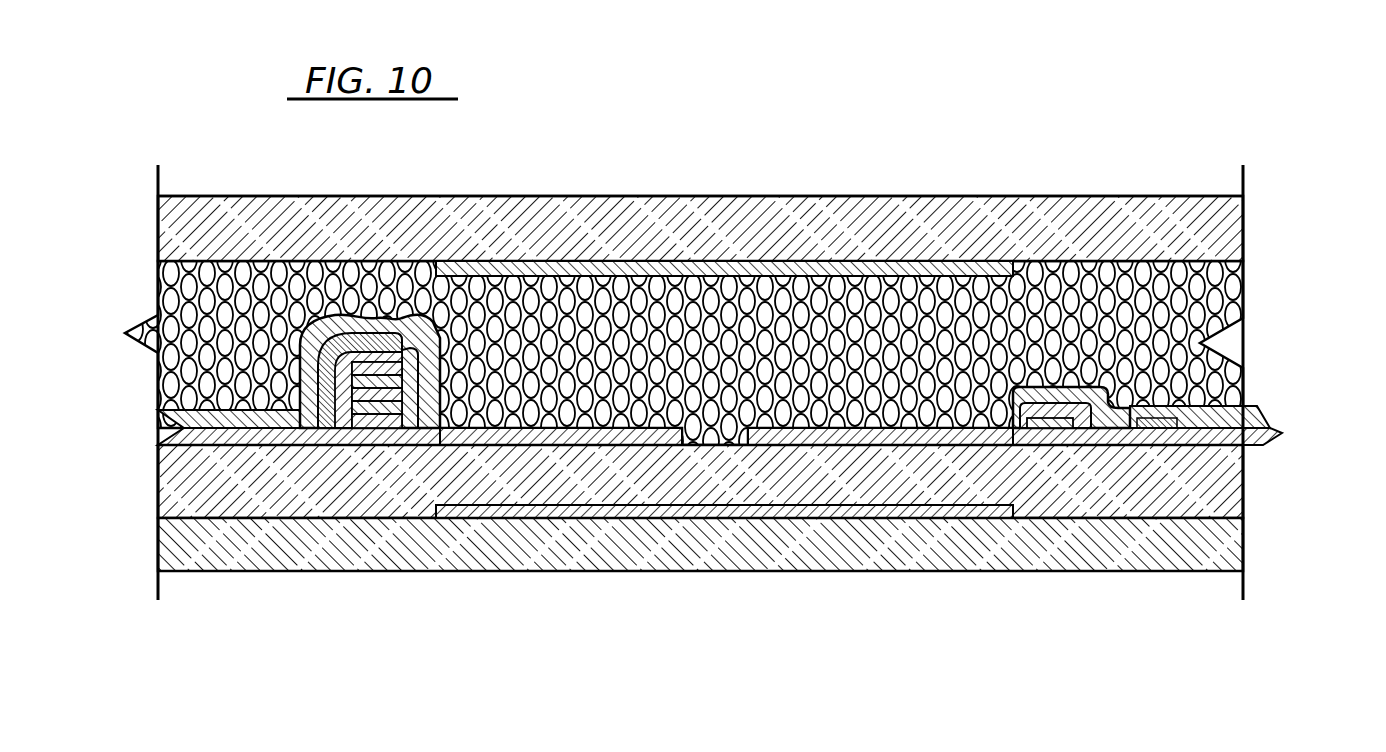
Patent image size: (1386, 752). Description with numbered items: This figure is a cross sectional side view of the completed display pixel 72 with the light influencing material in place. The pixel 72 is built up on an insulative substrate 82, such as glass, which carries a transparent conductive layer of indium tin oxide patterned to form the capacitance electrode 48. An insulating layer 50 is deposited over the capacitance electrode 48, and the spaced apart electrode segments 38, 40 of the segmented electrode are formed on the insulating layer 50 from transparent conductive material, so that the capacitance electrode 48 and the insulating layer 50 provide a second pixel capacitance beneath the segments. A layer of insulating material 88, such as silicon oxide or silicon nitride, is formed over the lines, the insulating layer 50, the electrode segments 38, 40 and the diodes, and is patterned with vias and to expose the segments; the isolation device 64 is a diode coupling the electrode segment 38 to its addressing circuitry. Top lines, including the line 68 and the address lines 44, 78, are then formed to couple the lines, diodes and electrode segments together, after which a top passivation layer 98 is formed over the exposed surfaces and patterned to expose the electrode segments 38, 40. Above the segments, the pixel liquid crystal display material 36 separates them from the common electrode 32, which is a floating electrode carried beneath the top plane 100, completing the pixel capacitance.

The top plane 100 is at (1205, 232).
The pixel 72 is at (1056, 194).
The common electrode 32 is at (818, 262).
The liquid crystal display material 36 is at (1160, 308).
The line 68 is at (305, 352).
The top passivation layer 98 is at (178, 422).
The insulating material 88 is at (178, 432).
The isolation device 64 is at (366, 420).
The electrode segment 38 is at (513, 430).
The capacitance electrode 48 is at (652, 515).
The insulative substrate 82 is at (748, 545).
The insulating layer 50 is at (1222, 492).
The electrode segment 40 is at (935, 432).
The address line 44 is at (1041, 432).
The address line 78 is at (1215, 387).